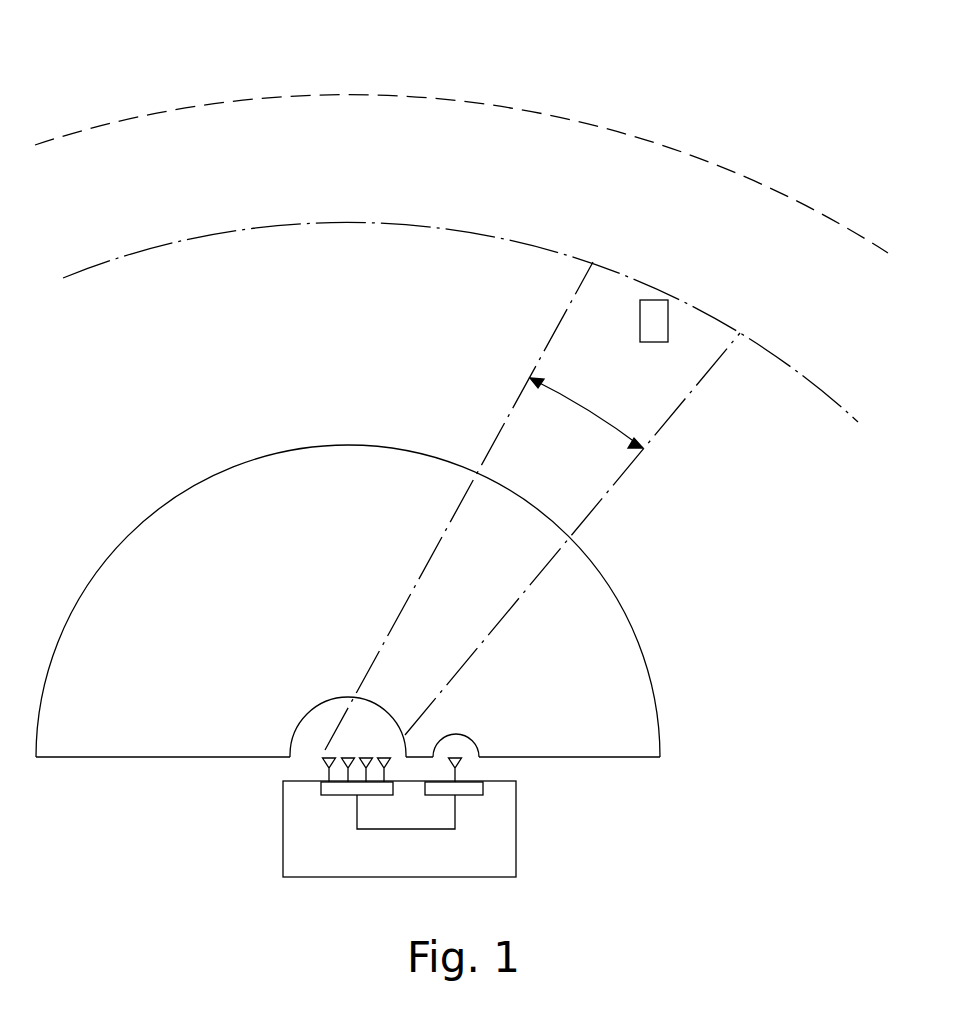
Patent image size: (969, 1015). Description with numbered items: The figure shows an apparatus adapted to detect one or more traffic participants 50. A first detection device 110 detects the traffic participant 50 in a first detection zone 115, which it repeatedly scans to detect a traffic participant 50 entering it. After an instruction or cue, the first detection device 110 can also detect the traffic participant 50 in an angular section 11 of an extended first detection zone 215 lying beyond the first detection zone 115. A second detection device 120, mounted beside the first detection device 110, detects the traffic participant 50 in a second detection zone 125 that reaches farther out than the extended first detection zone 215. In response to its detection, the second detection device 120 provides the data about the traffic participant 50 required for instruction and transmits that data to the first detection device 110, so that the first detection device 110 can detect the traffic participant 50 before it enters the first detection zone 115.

The second detection zone 125 is at (368, 97).
The extended first detection zone 215 is at (357, 223).
The traffic participant 50 is at (653, 304).
The angular section 11 is at (575, 393).
The first detection zone 115 is at (297, 447).
The first detection device 110 is at (321, 785).
The second detection device 120 is at (483, 787).